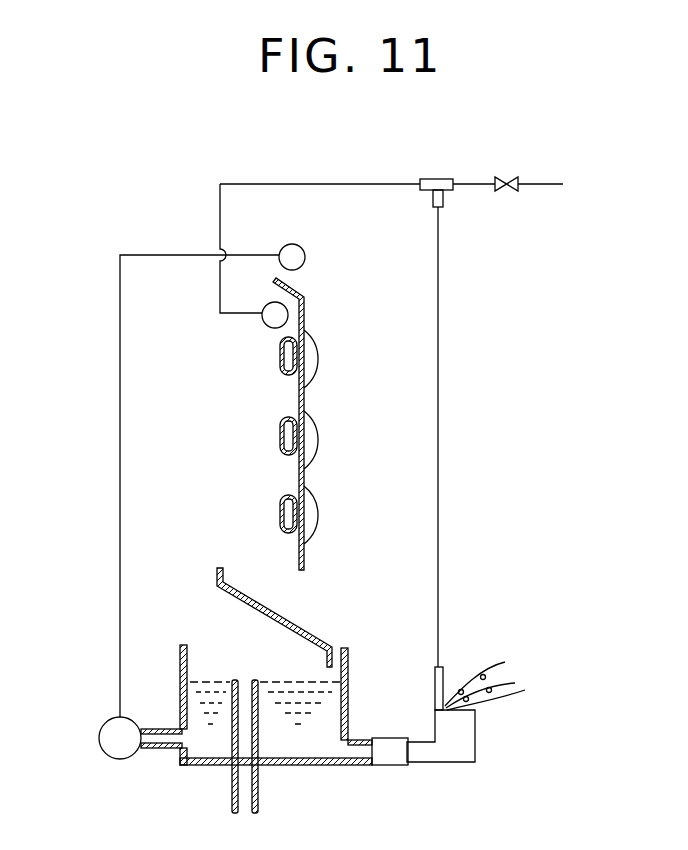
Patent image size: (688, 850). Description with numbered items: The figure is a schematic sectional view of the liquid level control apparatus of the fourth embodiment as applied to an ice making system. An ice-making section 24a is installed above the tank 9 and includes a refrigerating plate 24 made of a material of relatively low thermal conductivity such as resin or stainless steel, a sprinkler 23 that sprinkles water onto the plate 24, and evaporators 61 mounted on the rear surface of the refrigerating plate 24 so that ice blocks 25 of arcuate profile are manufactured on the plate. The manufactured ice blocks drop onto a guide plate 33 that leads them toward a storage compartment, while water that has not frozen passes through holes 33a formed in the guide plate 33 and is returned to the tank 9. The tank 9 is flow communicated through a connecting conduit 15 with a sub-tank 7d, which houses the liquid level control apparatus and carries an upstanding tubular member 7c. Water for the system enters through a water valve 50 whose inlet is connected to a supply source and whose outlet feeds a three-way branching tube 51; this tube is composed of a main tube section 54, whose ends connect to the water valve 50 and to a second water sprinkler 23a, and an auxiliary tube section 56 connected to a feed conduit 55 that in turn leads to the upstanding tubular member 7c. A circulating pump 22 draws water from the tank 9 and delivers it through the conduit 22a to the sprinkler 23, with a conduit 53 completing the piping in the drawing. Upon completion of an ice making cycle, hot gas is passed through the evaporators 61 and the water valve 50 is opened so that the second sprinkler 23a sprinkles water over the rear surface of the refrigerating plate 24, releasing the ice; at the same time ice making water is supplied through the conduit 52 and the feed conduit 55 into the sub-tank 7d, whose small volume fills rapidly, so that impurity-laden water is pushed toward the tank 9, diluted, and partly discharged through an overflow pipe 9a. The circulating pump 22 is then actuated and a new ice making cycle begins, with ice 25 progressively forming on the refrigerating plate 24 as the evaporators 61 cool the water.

The upstanding tubular member 7c is at (444, 672).
The sub-tank 7d is at (466, 740).
The tank 9 is at (197, 766).
The overflow pipe 9a is at (258, 806).
The connecting conduit 15 is at (386, 767).
The circulating pump 22 is at (120, 760).
The conduit 22a is at (118, 533).
The sprinkler 23 is at (304, 250).
The second water sprinkler 23a is at (266, 327).
The refrigerating plate 24 is at (297, 397).
The ice-making section 24a is at (320, 474).
The ice blocks 25 is at (320, 437).
The guide plate 33 is at (216, 580).
The holes 33a is at (308, 638).
The water valve 50 is at (511, 193).
The three-way branching tube 51 is at (440, 176).
The conduit 52 is at (476, 188).
The pipe 53 is at (373, 183).
The main tube section 54 is at (448, 179).
The feed conduit 55 is at (440, 447).
The auxiliary tube section 56 is at (433, 197).
The evaporators 61 is at (280, 437).